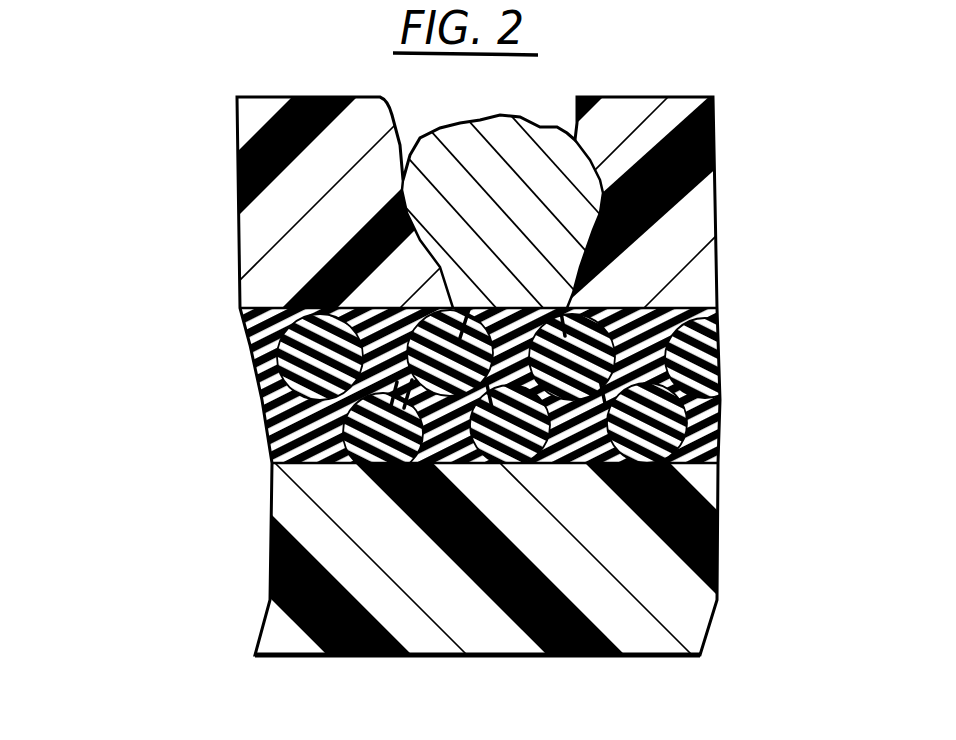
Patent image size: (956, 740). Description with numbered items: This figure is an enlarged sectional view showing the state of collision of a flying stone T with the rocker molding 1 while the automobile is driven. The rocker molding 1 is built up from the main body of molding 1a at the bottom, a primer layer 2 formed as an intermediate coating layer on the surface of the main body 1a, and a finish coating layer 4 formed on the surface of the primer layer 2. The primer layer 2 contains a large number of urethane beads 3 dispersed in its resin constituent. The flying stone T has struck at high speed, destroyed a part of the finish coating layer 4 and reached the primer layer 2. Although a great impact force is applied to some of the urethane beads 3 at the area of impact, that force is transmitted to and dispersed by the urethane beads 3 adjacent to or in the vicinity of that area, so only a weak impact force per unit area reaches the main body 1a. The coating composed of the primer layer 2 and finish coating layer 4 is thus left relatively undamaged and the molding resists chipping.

The rocker molding 1 is at (200, 495).
The main body of molding 1a is at (266, 607).
The primer layer 2 is at (244, 335).
The urethane beads 3 is at (264, 398).
The finish coating layer 4 is at (243, 231).
The flying stone T is at (465, 128).